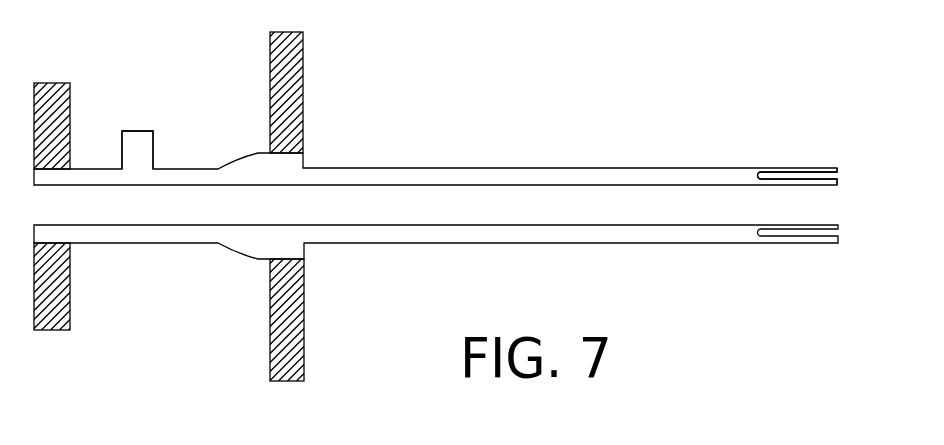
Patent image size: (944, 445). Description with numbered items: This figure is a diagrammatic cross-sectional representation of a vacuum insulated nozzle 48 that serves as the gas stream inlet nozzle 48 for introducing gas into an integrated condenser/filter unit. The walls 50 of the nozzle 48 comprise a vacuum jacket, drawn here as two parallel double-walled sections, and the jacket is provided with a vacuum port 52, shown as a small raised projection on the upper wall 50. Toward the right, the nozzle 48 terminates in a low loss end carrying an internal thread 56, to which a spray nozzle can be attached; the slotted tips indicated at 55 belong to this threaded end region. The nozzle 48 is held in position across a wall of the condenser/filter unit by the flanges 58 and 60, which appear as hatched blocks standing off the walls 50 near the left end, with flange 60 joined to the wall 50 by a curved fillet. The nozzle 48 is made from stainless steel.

The vacuum insulated nozzle 48 is at (537, 115).
The walls 50 is at (670, 167).
The vacuum port 52 is at (136, 131).
The contact fingers 55 is at (791, 252).
The internal thread 56 is at (815, 167).
The flange 58 is at (48, 83).
The flange 60 is at (303, 48).